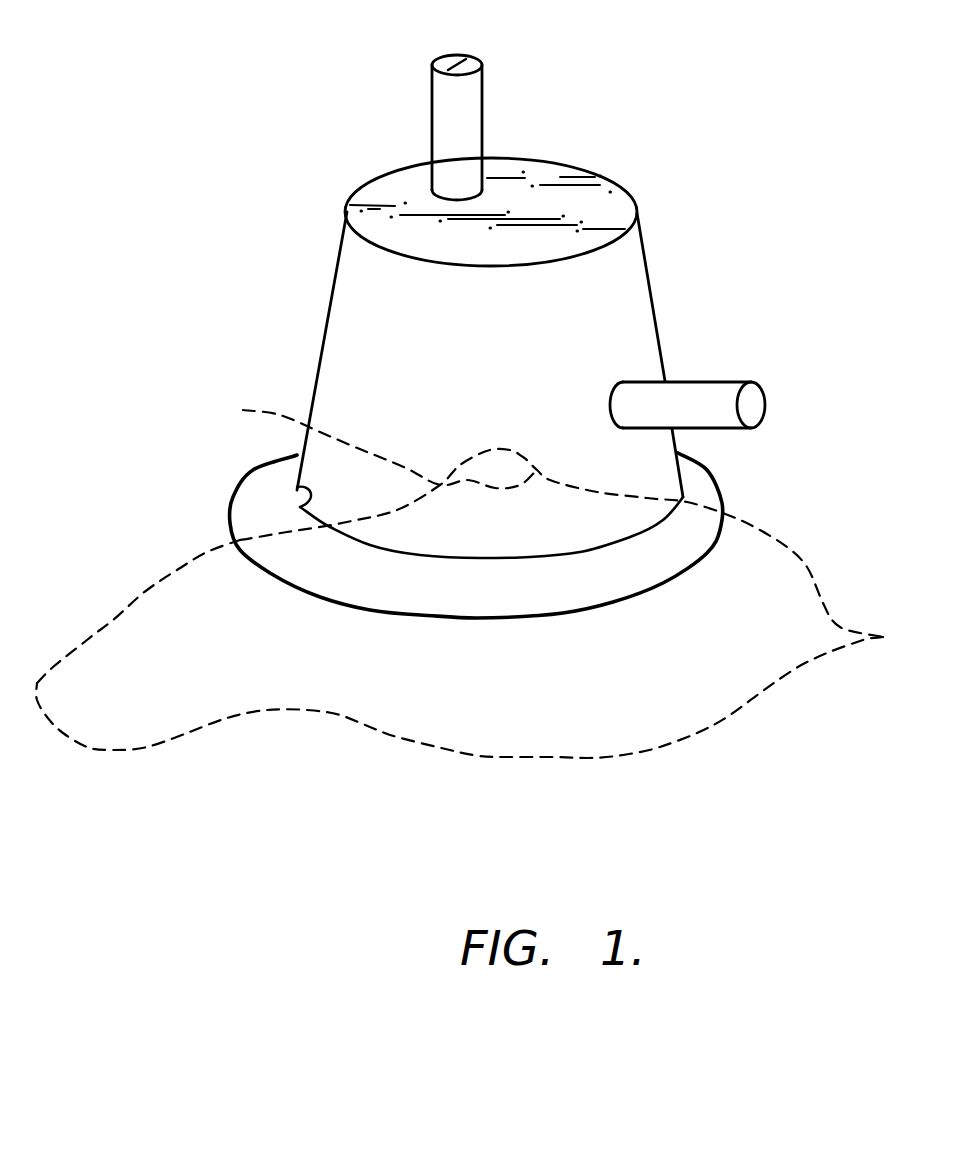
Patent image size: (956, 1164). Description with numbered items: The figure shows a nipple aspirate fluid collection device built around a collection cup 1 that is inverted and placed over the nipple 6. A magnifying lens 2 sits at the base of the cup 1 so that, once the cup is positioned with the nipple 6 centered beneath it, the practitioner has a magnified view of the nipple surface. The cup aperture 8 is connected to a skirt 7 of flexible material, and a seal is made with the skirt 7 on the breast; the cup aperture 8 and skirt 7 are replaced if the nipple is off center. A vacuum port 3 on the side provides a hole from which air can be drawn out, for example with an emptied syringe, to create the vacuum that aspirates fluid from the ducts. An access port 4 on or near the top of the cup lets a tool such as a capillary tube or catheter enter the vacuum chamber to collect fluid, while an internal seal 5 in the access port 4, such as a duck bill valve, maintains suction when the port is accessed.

The collection cup 1 is at (222, 257).
The magnifying lens 2 is at (583, 213).
The vacuum port 3 is at (697, 388).
The access port 4 is at (432, 100).
The internal seal 5 is at (450, 50).
The nipple 6 is at (459, 574).
The skirt 7 is at (688, 528).
The cup aperture 8 is at (297, 485).